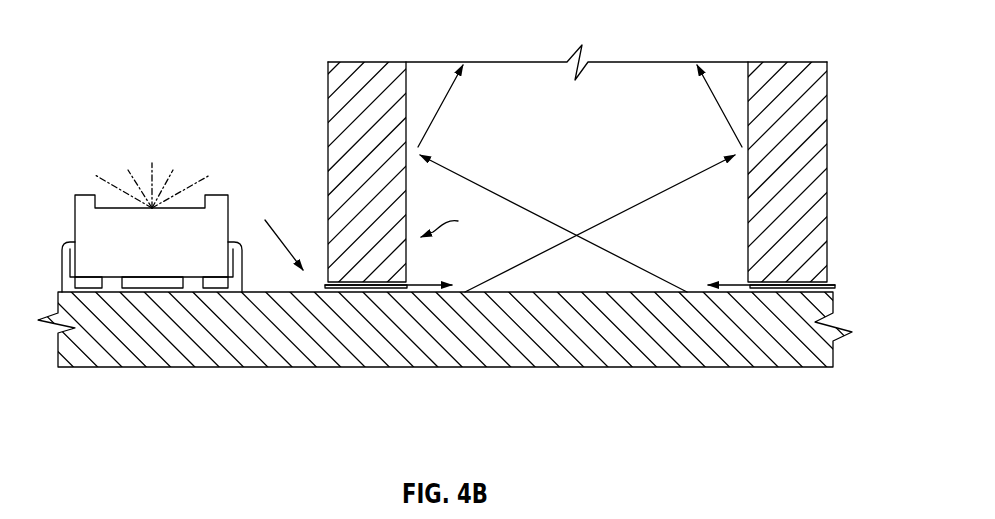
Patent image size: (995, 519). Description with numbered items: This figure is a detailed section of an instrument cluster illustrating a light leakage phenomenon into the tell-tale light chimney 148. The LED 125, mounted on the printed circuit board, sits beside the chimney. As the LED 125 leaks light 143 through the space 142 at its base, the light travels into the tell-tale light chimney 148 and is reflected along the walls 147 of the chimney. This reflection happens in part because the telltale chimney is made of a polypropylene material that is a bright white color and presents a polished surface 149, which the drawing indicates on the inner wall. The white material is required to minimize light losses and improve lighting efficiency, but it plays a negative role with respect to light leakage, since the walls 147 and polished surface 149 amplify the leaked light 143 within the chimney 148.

The LED 125 is at (170, 263).
The space 142 is at (357, 292).
The light 143 is at (480, 184).
The walls 147 is at (750, 243).
The tell-tale light chimney 148 is at (661, 194).
The polished surface 149 is at (459, 222).